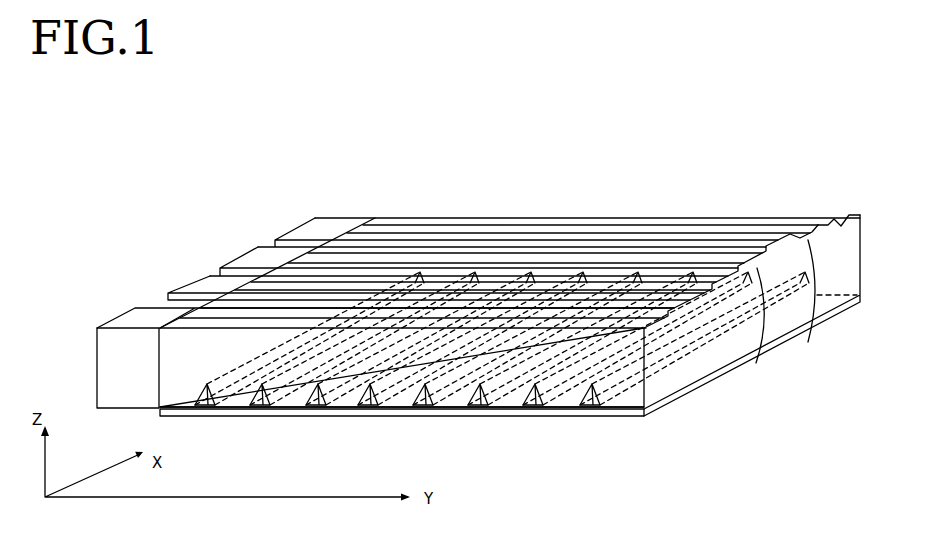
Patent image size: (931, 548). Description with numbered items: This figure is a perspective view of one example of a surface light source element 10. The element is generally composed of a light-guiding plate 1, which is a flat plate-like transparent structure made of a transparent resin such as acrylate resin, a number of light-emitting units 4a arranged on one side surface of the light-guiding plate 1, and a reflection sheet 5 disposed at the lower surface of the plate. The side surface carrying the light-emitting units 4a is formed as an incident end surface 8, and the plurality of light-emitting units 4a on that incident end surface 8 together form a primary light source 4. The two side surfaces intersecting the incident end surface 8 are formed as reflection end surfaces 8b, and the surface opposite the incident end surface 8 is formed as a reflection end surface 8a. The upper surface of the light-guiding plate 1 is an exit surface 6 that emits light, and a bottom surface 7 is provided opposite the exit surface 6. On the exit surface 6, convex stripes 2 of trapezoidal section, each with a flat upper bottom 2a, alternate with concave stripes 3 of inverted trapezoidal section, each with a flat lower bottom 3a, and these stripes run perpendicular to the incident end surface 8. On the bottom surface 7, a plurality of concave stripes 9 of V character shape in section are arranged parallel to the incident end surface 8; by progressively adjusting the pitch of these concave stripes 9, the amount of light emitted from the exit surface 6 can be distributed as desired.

The surface light source element 10 is at (679, 120).
The light-guiding plate 1 is at (418, 214).
The convex stripe 2 is at (793, 219).
The upper bottom 2a is at (577, 218).
The concave stripe 3 is at (697, 218).
The lower bottom 3a is at (794, 313).
The primary light source 4 is at (347, 196).
The light-emitting unit 4a is at (313, 224).
The reflection sheet 5 is at (297, 413).
The exit surface 6 is at (507, 211).
The bottom surface 7 is at (445, 418).
The incident end surface 8 is at (181, 372).
The reflection end surface 8a is at (728, 348).
The reflection end surface 8b is at (248, 372).
The V character-shaped concave stripe 9 is at (537, 407).